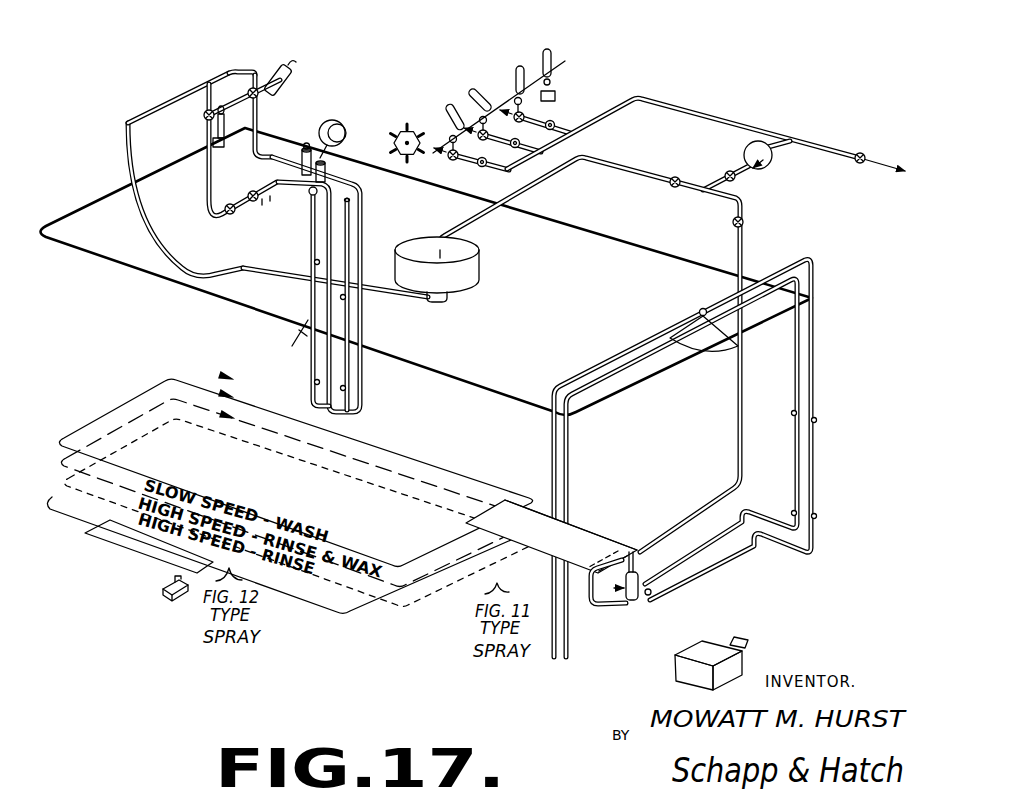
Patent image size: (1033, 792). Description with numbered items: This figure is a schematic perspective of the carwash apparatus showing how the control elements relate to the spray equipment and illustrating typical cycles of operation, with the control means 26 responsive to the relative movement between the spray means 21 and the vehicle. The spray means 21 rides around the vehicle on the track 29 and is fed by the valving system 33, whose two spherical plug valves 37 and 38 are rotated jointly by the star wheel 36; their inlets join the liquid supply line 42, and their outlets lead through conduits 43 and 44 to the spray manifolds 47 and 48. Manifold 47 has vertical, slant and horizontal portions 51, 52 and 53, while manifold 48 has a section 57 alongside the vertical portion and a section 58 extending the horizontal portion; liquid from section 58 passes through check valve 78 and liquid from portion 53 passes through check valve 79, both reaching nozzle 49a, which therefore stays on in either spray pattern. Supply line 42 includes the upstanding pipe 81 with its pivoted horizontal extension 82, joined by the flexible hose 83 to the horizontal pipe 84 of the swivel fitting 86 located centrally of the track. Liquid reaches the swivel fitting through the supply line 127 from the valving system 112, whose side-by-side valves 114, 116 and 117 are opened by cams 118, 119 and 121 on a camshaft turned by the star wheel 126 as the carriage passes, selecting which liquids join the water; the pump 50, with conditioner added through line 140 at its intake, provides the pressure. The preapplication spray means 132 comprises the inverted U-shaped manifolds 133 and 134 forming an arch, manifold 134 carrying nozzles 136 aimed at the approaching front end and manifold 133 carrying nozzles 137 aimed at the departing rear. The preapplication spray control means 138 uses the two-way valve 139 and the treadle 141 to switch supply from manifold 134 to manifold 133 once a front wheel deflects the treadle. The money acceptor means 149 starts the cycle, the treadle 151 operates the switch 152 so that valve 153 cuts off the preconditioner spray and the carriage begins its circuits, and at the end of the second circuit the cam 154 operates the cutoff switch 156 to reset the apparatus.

The spray means 21 is at (290, 339).
The control means 26 is at (108, 136).
The track 29 is at (110, 262).
The valving system 33 is at (263, 56).
The star wheel 36 is at (294, 71).
The valve 37 is at (205, 118).
The valve 38 is at (259, 97).
The liquid supply line 42 is at (200, 97).
The conduit 43 is at (326, 229).
The conduit 44 is at (362, 207).
The spray manifold 47 is at (311, 254).
The spray manifold 48 is at (350, 258).
The spray nozzle 49a is at (262, 206).
The pump 50 is at (764, 141).
The vertical portion 51 is at (314, 368).
The slant portion 52 is at (308, 195).
The horizontal portion 53 is at (264, 185).
The section of manifold 48 57 is at (350, 320).
The section of manifold 48 58 is at (214, 222).
The check valve 78 is at (230, 215).
The check valve 79 is at (270, 202).
The upstanding portion (pipe) 81 is at (234, 70).
The horizontal extension 82 is at (202, 84).
The flexible hose 83 is at (153, 230).
The horizontally extending pipe 84 is at (297, 277).
The swivel fitting 86 is at (452, 238).
The valving system 112 is at (632, 111).
The valve 114 is at (451, 159).
The valve 116 is at (481, 140).
The valve 117 is at (517, 108).
The cam 118 is at (452, 105).
The cam 119 is at (473, 90).
The cam 121 is at (528, 52).
The star wheel 126 is at (396, 158).
The supply line 127 is at (638, 171).
The preapplication spray means 132 is at (718, 458).
The manifold 133 is at (801, 329).
The manifold 134 is at (815, 364).
The spray nozzles 136 is at (723, 345).
The spray nozzles 137 is at (697, 308).
The preapplication spray control means 138 is at (611, 536).
The two-way valve 139 is at (633, 601).
The line 140 is at (828, 153).
The treadle 141 is at (584, 536).
The money acceptor means 149 is at (676, 664).
The treadle 151 is at (110, 538).
The switch 152 is at (164, 597).
The valve 153 is at (861, 153).
The cam 154 is at (548, 50).
The cutoff switch 156 is at (557, 93).